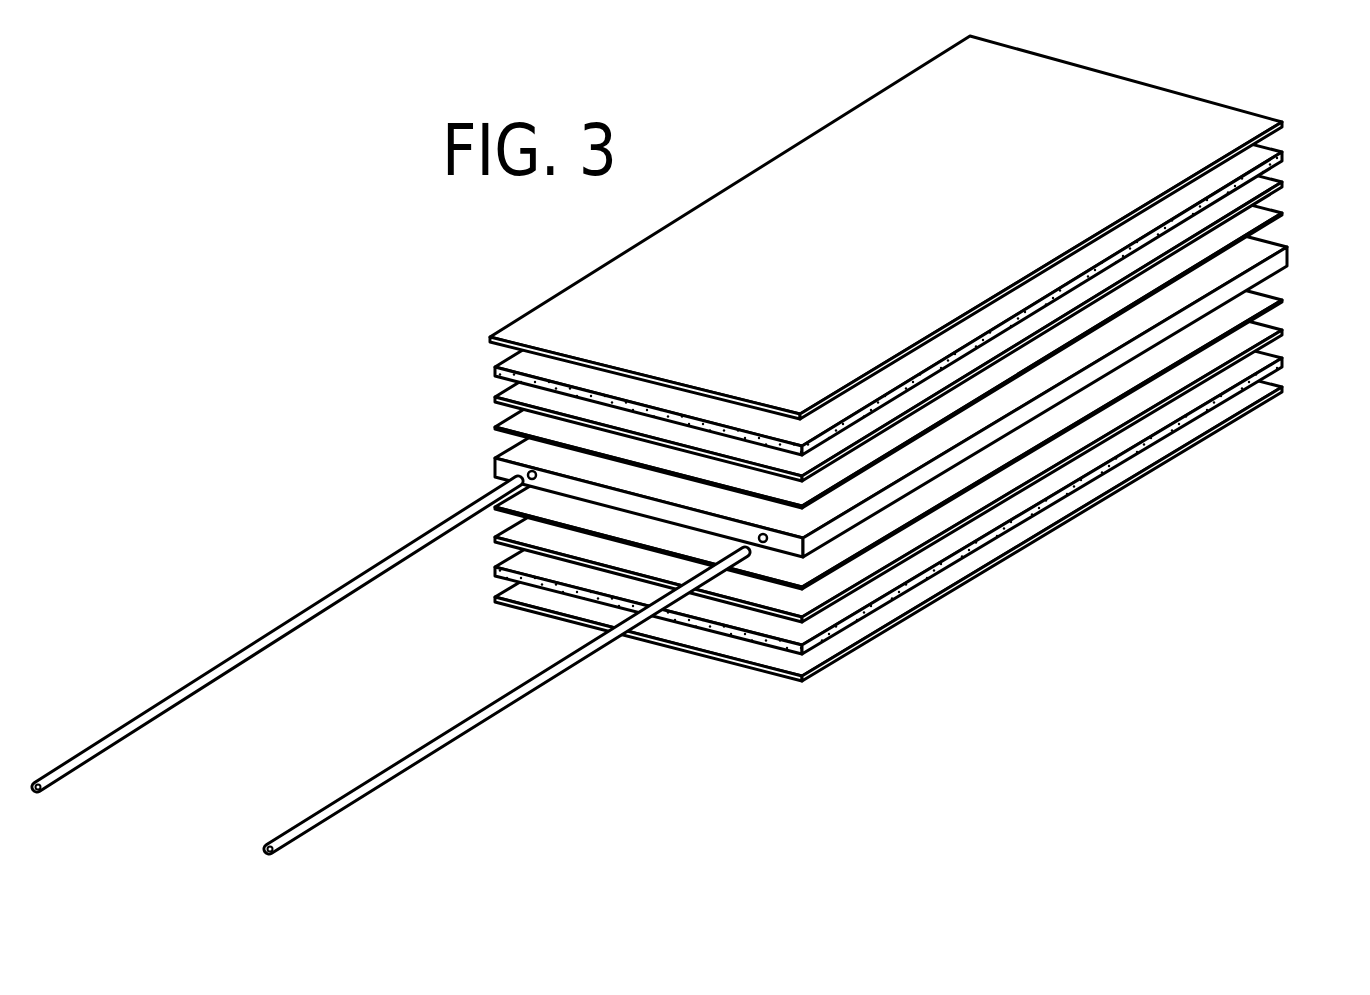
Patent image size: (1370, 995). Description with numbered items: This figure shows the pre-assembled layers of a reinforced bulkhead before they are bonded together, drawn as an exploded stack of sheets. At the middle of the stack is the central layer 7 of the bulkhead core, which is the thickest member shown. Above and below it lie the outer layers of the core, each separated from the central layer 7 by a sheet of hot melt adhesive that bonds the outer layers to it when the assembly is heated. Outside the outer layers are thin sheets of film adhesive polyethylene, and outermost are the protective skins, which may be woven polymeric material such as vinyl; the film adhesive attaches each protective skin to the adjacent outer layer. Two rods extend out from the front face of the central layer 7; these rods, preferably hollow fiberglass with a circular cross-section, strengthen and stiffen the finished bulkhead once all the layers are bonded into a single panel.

The central layer 7 is at (1288, 258).